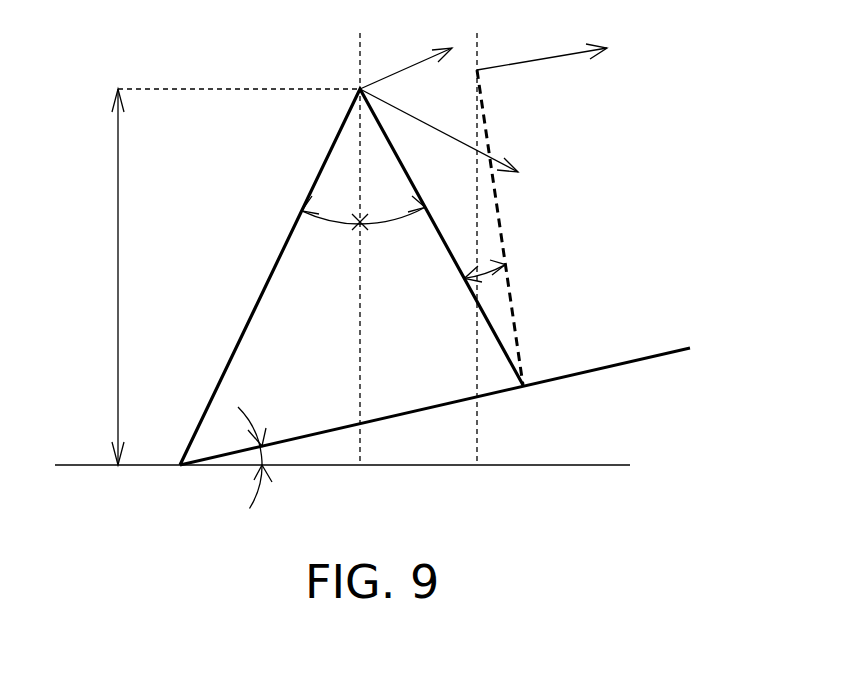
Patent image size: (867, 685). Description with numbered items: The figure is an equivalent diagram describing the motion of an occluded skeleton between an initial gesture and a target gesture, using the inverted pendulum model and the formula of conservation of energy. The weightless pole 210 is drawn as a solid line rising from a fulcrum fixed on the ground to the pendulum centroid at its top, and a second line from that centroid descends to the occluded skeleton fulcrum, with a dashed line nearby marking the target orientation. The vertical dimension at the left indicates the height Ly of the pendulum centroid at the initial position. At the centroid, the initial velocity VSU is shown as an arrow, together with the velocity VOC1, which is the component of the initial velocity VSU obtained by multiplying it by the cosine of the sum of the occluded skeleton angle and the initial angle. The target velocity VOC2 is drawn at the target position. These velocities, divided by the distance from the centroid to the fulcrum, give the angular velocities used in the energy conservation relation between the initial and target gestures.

The weightless pole 210 is at (267, 277).
The height Ly LY is at (99, 277).
The velocity V_OC1 VOC1 is at (412, 51).
The target velocity V_OC2 VOC2 is at (570, 50).
The initial velocity V_SU VSU is at (462, 140).